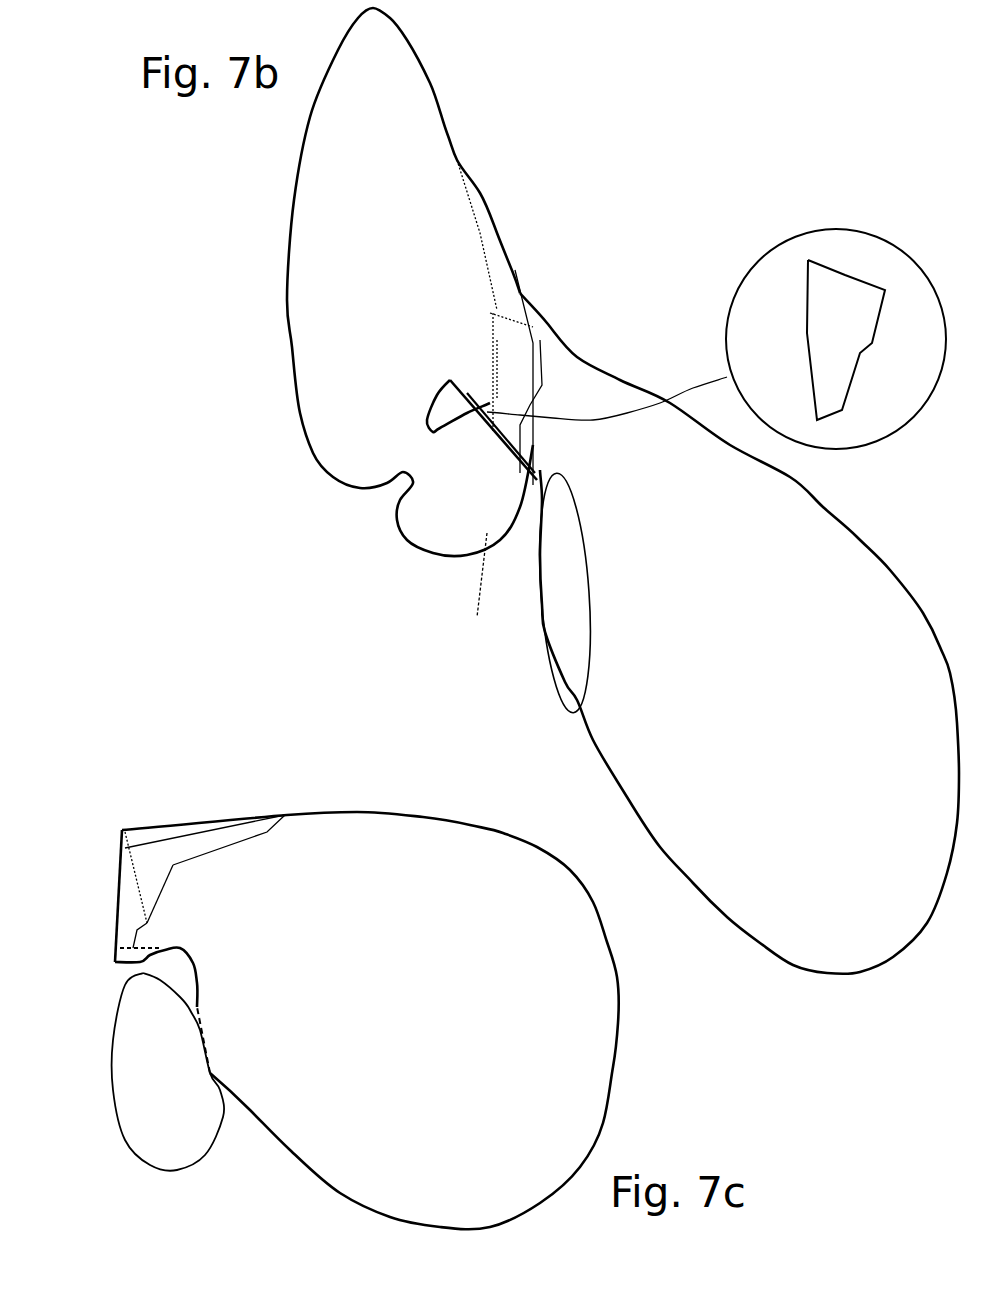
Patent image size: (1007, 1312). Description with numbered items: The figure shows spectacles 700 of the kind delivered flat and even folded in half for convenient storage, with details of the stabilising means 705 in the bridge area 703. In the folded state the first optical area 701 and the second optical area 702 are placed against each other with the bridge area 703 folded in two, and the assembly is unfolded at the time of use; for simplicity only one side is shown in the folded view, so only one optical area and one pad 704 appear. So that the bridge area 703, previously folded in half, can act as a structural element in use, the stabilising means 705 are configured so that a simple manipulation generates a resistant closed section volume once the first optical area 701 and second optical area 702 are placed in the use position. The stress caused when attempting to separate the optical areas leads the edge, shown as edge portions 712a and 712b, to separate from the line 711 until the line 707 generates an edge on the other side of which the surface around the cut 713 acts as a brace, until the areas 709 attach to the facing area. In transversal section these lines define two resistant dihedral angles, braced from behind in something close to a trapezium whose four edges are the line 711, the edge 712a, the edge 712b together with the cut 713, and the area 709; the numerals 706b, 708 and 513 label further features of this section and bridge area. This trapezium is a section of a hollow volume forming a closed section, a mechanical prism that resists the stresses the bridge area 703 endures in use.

In FIG. 7B, the spectacles 700 is at (335, 518).
In FIG. 7C, the spectacles 700 is at (623, 1087).
In FIG. 7B, the first optical area 701 is at (828, 558).
In FIG. 7C, the first optical area 701 is at (580, 1063).
In FIG. 7B, the second optical area 702 is at (303, 302).
In FIG. 7B, the bridge area 703 is at (543, 405).
In FIG. 7B, the pad 704 is at (554, 598).
In FIG. 7C, the pad 704 is at (170, 1143).
In FIG. 7B, the stabilising means 705 is at (517, 277).
In FIG. 7B, the edge surface 706b is at (565, 342).
In FIG. 7C, the edge surface 706b is at (270, 813).
In FIG. 7B, the line 707 is at (523, 293).
In FIG. 7C, the line 707 is at (173, 865).
In FIG. 7C, the bottom edge 708 is at (122, 967).
In FIG. 7B, the area 709 is at (833, 430).
In FIG. 7B, the line 711 is at (492, 373).
In FIG. 7C, the line 711 is at (120, 903).
In FIG. 7B, the edge 712a is at (543, 322).
In FIG. 7C, the edge 712a is at (183, 823).
In FIG. 7B, the edge 712b is at (869, 340).
In FIG. 7C, the cut 713 is at (122, 947).
In FIG. 7B, the notch face 513 is at (872, 392).